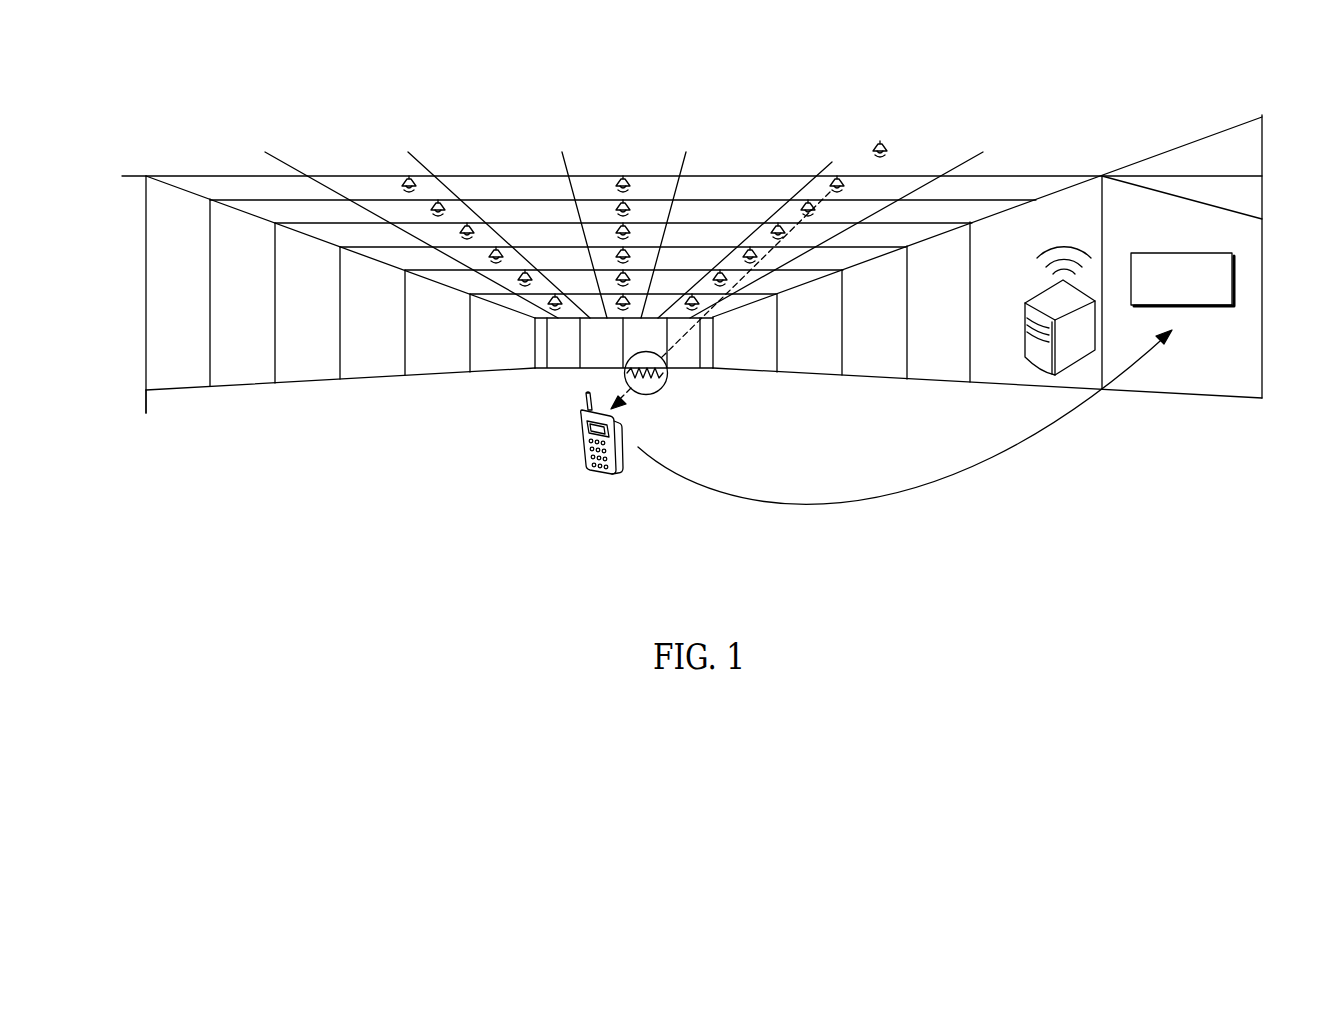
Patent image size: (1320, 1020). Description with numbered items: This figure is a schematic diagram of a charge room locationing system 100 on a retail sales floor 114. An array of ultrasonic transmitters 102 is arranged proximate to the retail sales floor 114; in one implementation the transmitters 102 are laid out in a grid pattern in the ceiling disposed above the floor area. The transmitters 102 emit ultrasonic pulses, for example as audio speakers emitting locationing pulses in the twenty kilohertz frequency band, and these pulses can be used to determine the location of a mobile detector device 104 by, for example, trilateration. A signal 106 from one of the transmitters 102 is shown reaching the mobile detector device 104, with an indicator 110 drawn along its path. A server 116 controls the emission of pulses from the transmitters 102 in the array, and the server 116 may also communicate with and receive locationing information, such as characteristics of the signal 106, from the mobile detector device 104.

The charge room locationing system 100 is at (160, 118).
The ultrasonic transmitters 102 is at (409, 176).
The mobile detector device 104 is at (581, 438).
The signal 106 is at (695, 335).
The signal indicator 110 is at (661, 388).
The retail sales floor 114 is at (510, 395).
The server 116 is at (1025, 330).